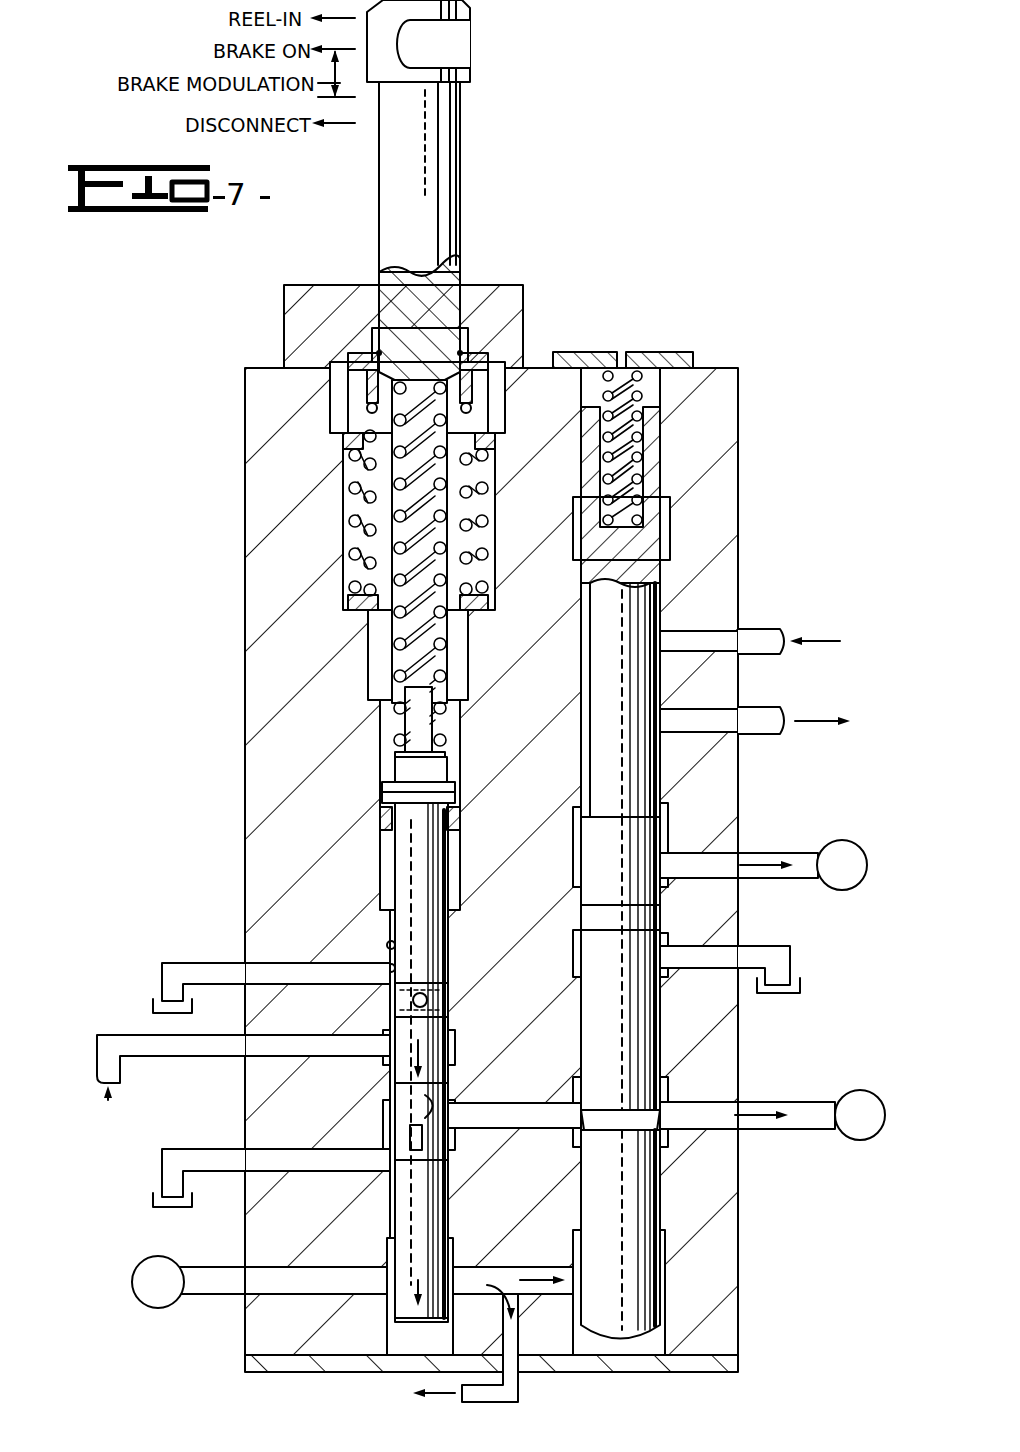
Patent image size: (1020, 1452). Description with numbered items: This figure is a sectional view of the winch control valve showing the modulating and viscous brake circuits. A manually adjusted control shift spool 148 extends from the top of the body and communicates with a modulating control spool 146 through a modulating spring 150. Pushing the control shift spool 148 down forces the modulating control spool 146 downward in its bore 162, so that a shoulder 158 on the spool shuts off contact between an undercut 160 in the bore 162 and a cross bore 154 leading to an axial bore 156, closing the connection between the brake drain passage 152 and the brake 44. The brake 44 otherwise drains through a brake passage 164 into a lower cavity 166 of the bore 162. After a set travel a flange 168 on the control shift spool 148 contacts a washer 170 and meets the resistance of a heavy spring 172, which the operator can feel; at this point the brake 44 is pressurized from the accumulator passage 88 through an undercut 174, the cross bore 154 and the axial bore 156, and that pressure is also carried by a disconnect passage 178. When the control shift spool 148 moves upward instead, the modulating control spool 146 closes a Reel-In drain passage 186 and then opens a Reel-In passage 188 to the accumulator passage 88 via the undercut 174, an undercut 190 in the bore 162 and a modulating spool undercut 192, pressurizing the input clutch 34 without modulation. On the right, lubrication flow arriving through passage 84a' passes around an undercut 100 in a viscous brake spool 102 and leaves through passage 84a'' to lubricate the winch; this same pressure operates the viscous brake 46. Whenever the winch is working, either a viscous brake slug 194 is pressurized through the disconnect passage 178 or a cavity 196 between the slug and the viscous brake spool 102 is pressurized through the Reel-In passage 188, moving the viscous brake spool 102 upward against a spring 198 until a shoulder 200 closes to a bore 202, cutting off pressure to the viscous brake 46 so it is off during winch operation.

The control shift spool 148 is at (410, 163).
The flange 168 is at (478, 372).
The washer 170 is at (343, 440).
The heavy spring 172 is at (353, 592).
The modulating spring 150 is at (393, 748).
The modulating control spool 146 is at (432, 850).
The bore 162 is at (391, 938).
The undercut 160 is at (391, 962).
The shoulder 158 is at (395, 995).
The cross bore 154 is at (443, 1000).
The undercut 174 is at (440, 1047).
The axial bore 156 is at (410, 1102).
The modulating spool undercut 192 is at (413, 1140).
The brake drain passage 152 is at (203, 972).
The accumulator passage 88 is at (198, 1048).
The Reel-In drain passage 186 is at (275, 1165).
The brake passage 164 is at (333, 1272).
The brake 44 is at (150, 1275).
The disconnect passage 178 is at (508, 1275).
The lower cavity 166 is at (412, 1340).
The undercut 190 is at (452, 1115).
The Reel-In passage 188 is at (532, 1110).
The spring 198 is at (647, 368).
The bore 202 is at (658, 587).
The viscous brake spool 102 is at (608, 660).
The shoulder 200 is at (660, 813).
The cavity 196 is at (663, 1092).
The viscous brake slug 194 is at (623, 1183).
The undercut 100 is at (583, 716).
The continuation of passage 84a' is at (750, 603).
The further continuation of passage 84a'' is at (797, 694).
The viscous brake 46 is at (845, 842).
The input clutch 34 is at (860, 1102).